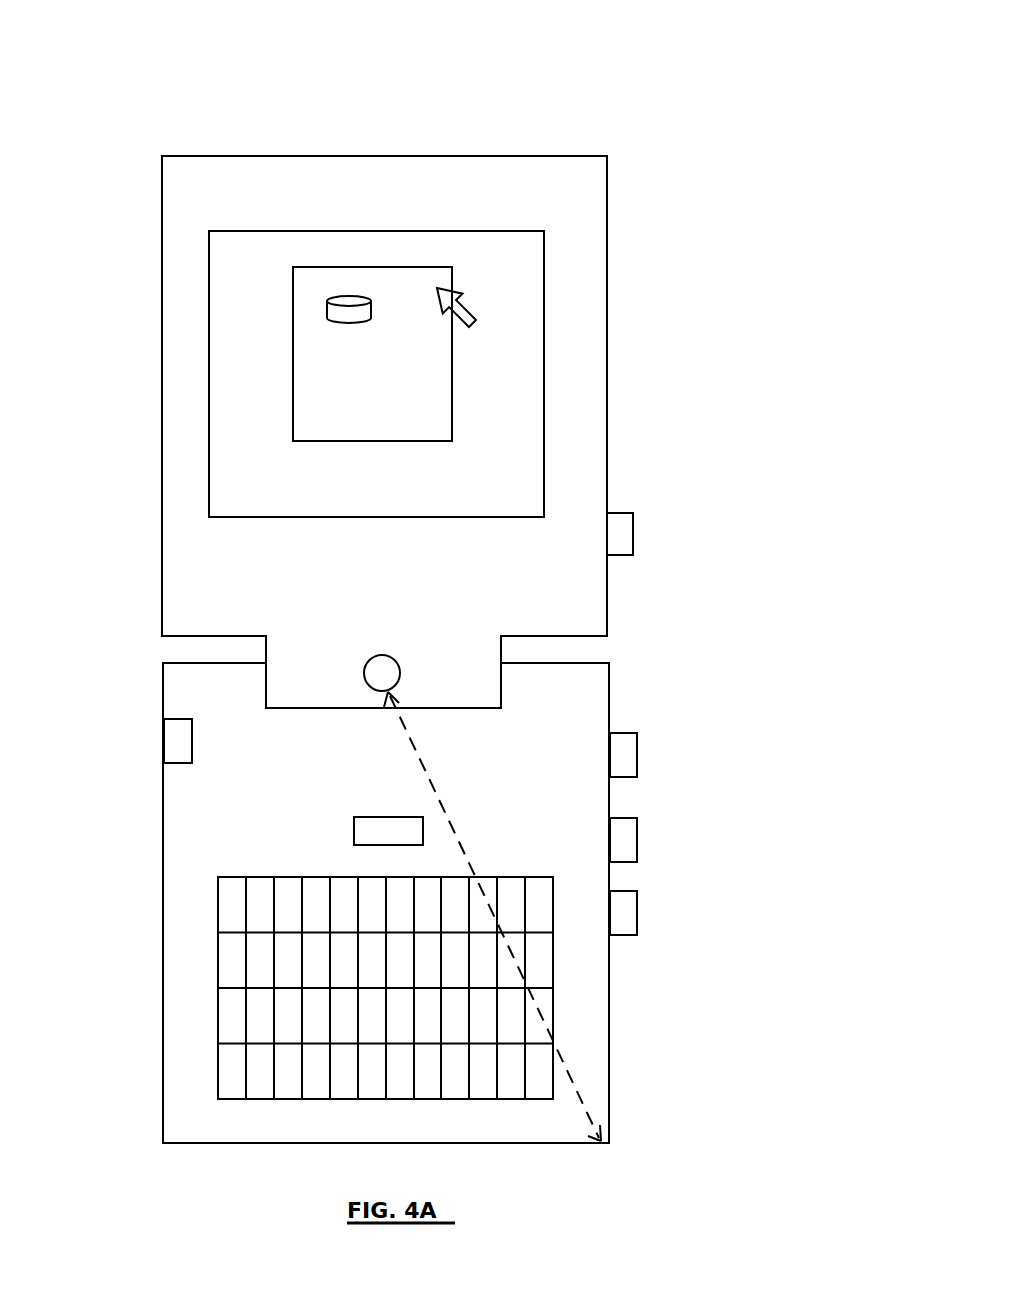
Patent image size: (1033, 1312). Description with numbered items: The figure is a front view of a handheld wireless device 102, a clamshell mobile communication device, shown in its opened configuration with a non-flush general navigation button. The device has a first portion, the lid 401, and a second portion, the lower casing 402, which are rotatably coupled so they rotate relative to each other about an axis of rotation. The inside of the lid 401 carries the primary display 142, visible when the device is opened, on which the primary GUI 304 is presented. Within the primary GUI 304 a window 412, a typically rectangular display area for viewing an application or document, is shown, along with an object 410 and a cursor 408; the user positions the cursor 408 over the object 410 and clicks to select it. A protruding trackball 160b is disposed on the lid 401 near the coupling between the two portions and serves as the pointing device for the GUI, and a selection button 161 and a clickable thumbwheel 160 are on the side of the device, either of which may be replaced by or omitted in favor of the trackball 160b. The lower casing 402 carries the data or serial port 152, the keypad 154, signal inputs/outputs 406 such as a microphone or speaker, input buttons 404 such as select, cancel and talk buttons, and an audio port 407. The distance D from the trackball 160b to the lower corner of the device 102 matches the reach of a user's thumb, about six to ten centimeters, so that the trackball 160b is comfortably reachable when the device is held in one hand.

The wireless device 102 is at (683, 157).
The lid 401 is at (262, 155).
The lower casing 402 is at (180, 873).
The primary display 142 is at (209, 267).
The primary GUI 304 is at (223, 295).
The object 410 is at (327, 308).
The cursor 408 is at (472, 325).
The window 412 is at (418, 283).
The selection button 161 is at (636, 530).
The data or serial port 152 is at (177, 741).
The trackball 160b is at (400, 673).
The signal inputs/outputs 406 is at (410, 817).
The keypad 154 is at (218, 962).
The clickable thumbwheel 160 is at (640, 757).
The input buttons 404 is at (640, 845).
The audio port 407 is at (640, 915).
The distance D is at (570, 1075).